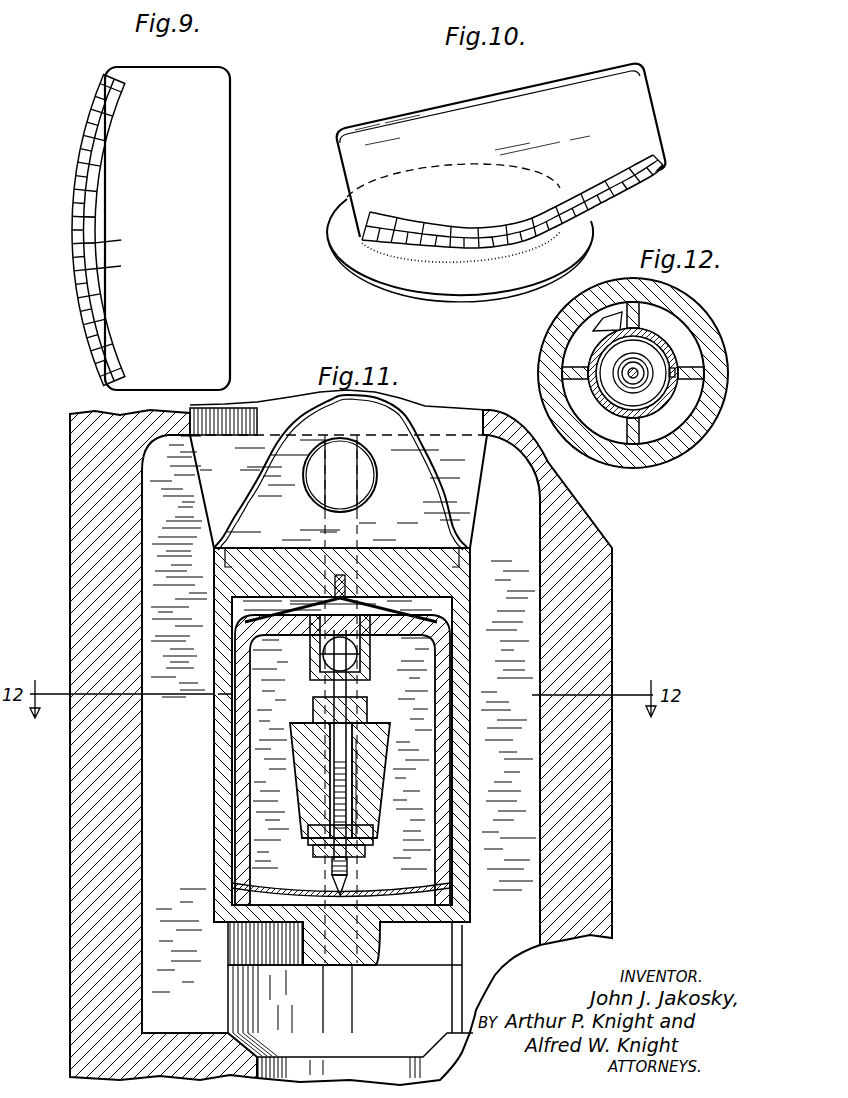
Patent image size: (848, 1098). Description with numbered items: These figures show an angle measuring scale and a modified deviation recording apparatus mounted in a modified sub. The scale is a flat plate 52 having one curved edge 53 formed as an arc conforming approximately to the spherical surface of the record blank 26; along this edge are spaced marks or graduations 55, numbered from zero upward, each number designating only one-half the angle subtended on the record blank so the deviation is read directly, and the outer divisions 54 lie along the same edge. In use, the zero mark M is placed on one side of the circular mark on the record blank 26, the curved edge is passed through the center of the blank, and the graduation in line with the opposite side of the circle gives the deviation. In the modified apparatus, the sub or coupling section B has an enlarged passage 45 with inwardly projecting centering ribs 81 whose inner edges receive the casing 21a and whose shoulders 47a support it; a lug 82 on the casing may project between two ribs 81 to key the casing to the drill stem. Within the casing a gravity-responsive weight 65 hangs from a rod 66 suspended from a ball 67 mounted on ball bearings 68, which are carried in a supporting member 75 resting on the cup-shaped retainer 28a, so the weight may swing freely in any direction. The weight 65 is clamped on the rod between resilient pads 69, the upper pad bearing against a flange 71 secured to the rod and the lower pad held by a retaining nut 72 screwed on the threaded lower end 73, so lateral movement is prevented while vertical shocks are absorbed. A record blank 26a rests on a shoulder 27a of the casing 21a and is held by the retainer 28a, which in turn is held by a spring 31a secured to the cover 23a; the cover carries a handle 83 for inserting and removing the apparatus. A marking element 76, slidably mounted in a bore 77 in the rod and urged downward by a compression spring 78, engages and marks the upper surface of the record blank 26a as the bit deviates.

In FIG. 9, the flat plate 52 is at (210, 165).
In FIG. 10, the flat plate 52 is at (653, 110).
In FIG. 9, the curved edge 53 is at (88, 336).
In FIG. 9, the outer scale divisions 54 is at (75, 244).
In FIG. 9, the marks or graduations 55 is at (113, 243).
In FIG. 10, the record blank 26 is at (580, 233).
In FIG. 10, the mark M is at (390, 258).
In FIG. 11, the centering ribs 81 is at (209, 532).
In FIG. 12, the centering ribs 81 is at (650, 442).
In FIG. 11, the lug 82 is at (283, 950).
In FIG. 12, the lug 82 is at (597, 330).
In FIG. 11, the handle 83 is at (402, 448).
In FIG. 11, the cover 23a is at (452, 531).
In FIG. 11, the spring 31a is at (470, 586).
In FIG. 11, the supporting member 75 is at (455, 643).
In FIG. 11, the cup-shaped retainer 28a is at (455, 665).
In FIG. 12, the cup-shaped retainer 28a is at (600, 392).
In FIG. 11, the ball 67 is at (360, 690).
In FIG. 11, the ball bearings 68 is at (372, 702).
In FIG. 11, the rod 66 is at (334, 745).
In FIG. 12, the rod 66 is at (640, 368).
In FIG. 11, the flange 71 is at (312, 699).
In FIG. 11, the casing 21a is at (380, 738).
In FIG. 12, the casing 21a is at (667, 356).
In FIG. 11, the weight 65 is at (378, 762).
In FIG. 12, the weight 65 is at (652, 385).
In FIG. 11, the bore 77 is at (386, 797).
In FIG. 11, the compression spring 78 is at (387, 818).
In FIG. 11, the resilient pads 69 is at (290, 725).
In FIG. 11, the retaining nut 72 is at (366, 851).
In FIG. 11, the threaded lower end 73 is at (350, 869).
In FIG. 11, the marking element 76 is at (335, 879).
In FIG. 11, the shoulder 27a is at (472, 893).
In FIG. 11, the record blank 26a is at (417, 915).
In FIG. 11, the shoulders 47a is at (217, 923).
In FIG. 11, the enlarged passage 45 is at (541, 660).
In FIG. 12, the enlarged passage 45 is at (672, 420).
In FIG. 11, the coupling section B is at (586, 806).
In FIG. 12, the coupling section B is at (619, 452).